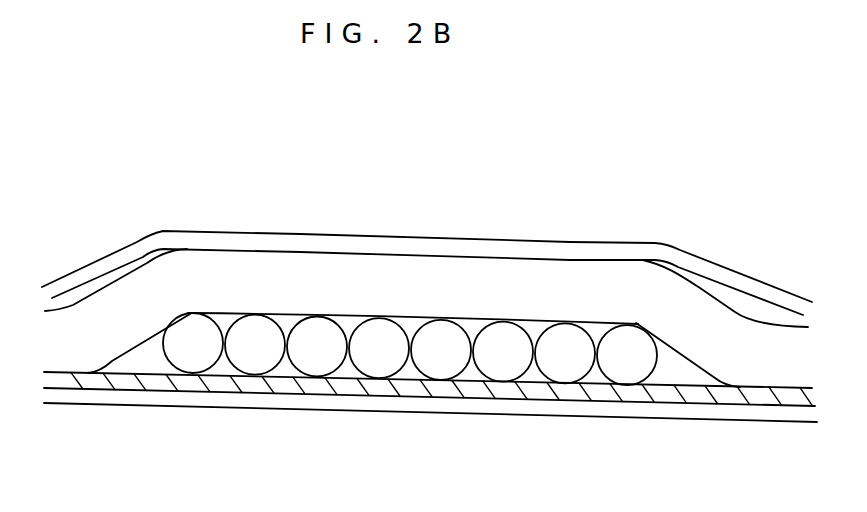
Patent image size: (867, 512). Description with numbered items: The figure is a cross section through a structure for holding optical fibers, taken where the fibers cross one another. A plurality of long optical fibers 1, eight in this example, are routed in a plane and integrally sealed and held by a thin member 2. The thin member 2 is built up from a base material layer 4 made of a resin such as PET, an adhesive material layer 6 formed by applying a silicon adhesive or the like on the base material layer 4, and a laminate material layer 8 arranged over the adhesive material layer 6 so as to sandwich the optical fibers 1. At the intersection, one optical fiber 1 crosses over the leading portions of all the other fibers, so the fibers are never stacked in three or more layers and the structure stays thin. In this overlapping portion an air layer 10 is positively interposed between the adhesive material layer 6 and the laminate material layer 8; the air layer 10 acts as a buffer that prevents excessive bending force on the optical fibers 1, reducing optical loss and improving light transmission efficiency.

The optical fiber 1 is at (273, 265).
The thin member 2 is at (129, 243).
The base material layer 4 is at (608, 410).
The adhesive material layer 6 is at (713, 397).
The laminate material layer 8 is at (645, 255).
The air layer 10 is at (145, 357).